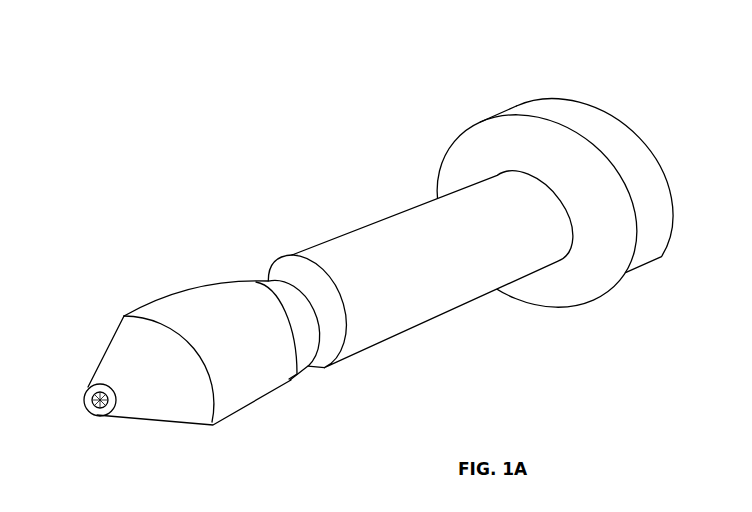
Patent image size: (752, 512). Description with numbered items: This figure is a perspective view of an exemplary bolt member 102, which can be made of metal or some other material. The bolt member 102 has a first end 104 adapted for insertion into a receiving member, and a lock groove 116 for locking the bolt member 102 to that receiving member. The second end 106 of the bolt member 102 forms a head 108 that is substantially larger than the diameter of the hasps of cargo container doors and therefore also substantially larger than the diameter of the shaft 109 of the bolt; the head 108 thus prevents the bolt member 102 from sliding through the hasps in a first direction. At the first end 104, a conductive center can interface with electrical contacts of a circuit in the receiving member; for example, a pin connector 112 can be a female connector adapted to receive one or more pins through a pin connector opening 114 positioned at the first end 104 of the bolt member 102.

The bolt member 102 is at (546, 188).
The first end 104 is at (164, 370).
The second end 106 is at (480, 107).
The head 108 is at (596, 235).
The shaft 109 is at (458, 264).
The pin connector 112 is at (102, 432).
The pin connector opening 114 is at (86, 402).
The lock groove 116 is at (312, 382).